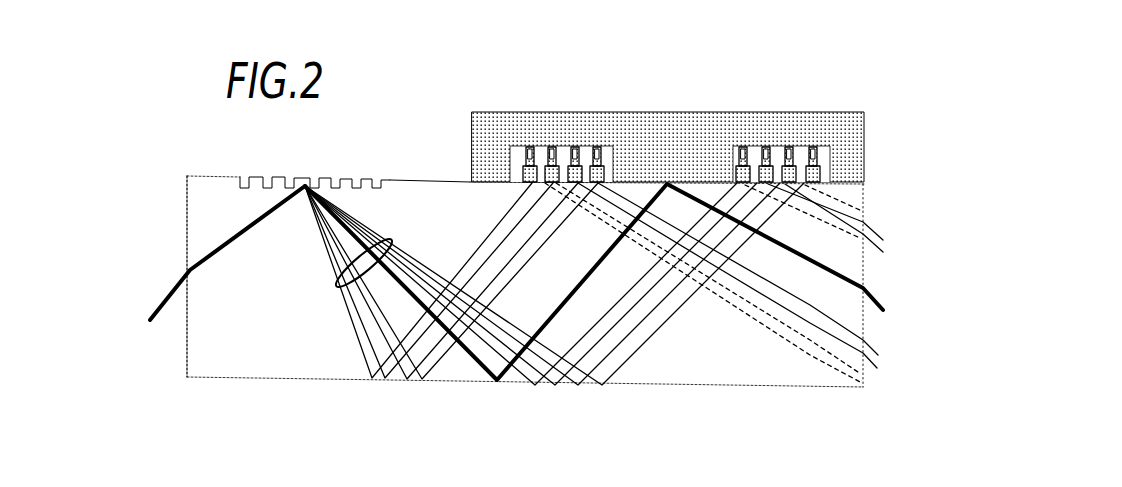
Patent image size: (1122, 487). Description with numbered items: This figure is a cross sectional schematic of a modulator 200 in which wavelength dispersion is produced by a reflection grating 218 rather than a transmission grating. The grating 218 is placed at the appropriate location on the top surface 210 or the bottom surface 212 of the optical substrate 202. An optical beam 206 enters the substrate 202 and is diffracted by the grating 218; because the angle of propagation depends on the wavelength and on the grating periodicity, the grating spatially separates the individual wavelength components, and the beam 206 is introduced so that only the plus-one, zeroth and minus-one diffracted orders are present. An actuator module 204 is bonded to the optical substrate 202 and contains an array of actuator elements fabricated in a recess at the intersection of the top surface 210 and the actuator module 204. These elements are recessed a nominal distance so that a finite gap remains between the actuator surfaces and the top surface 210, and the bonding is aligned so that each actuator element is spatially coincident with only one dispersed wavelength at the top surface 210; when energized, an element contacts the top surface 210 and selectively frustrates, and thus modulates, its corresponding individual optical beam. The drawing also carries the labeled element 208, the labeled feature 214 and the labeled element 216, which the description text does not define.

The modulator 200 is at (409, 110).
The optical substrate 202 is at (248, 380).
The actuator module 204 is at (570, 121).
The optical beam 206 is at (165, 290).
The input facet 208 is at (187, 228).
The top surface 210 is at (414, 183).
The bottom surface 212 is at (322, 380).
The diffracted beam bundle 214 is at (355, 261).
The output beams 216 is at (866, 270).
The reflection grating 218 is at (300, 179).